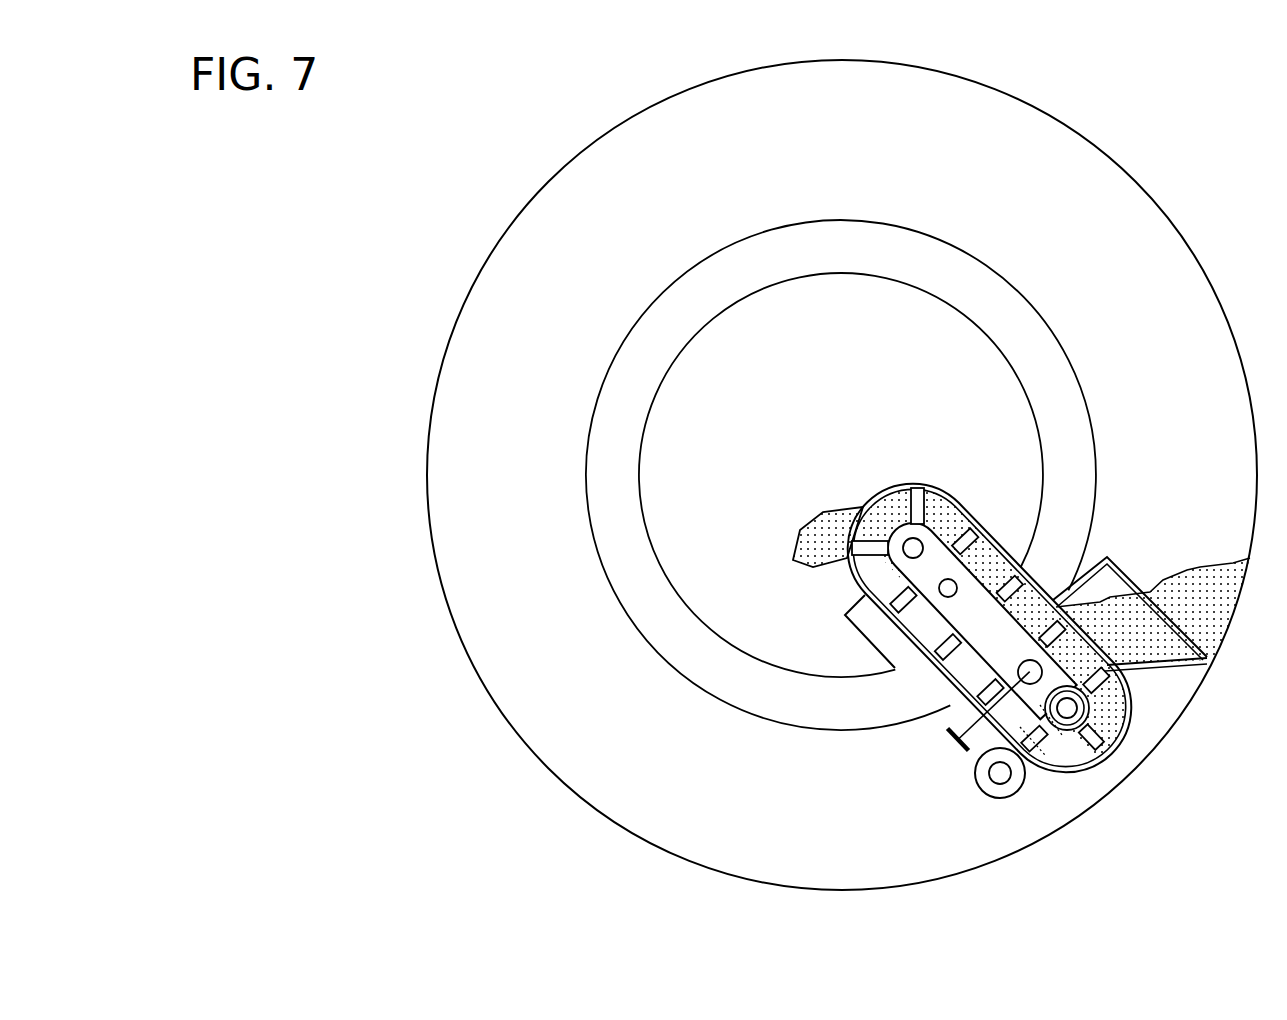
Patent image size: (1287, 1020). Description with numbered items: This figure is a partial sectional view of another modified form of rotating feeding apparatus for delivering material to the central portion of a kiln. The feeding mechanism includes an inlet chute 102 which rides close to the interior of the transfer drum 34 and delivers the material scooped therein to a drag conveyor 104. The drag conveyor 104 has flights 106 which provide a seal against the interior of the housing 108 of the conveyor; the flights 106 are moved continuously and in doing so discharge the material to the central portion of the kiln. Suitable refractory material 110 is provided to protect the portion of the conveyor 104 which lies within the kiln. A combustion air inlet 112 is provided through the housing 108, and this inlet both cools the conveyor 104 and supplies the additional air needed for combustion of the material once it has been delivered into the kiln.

The transfer drum 34 is at (579, 797).
The inlet chute 102 is at (1180, 655).
The drag conveyor 104 is at (1033, 583).
The flights 106 is at (1005, 587).
The housing 108 is at (953, 688).
The refractory material 110 is at (863, 636).
The combustion air inlet 112 is at (965, 752).